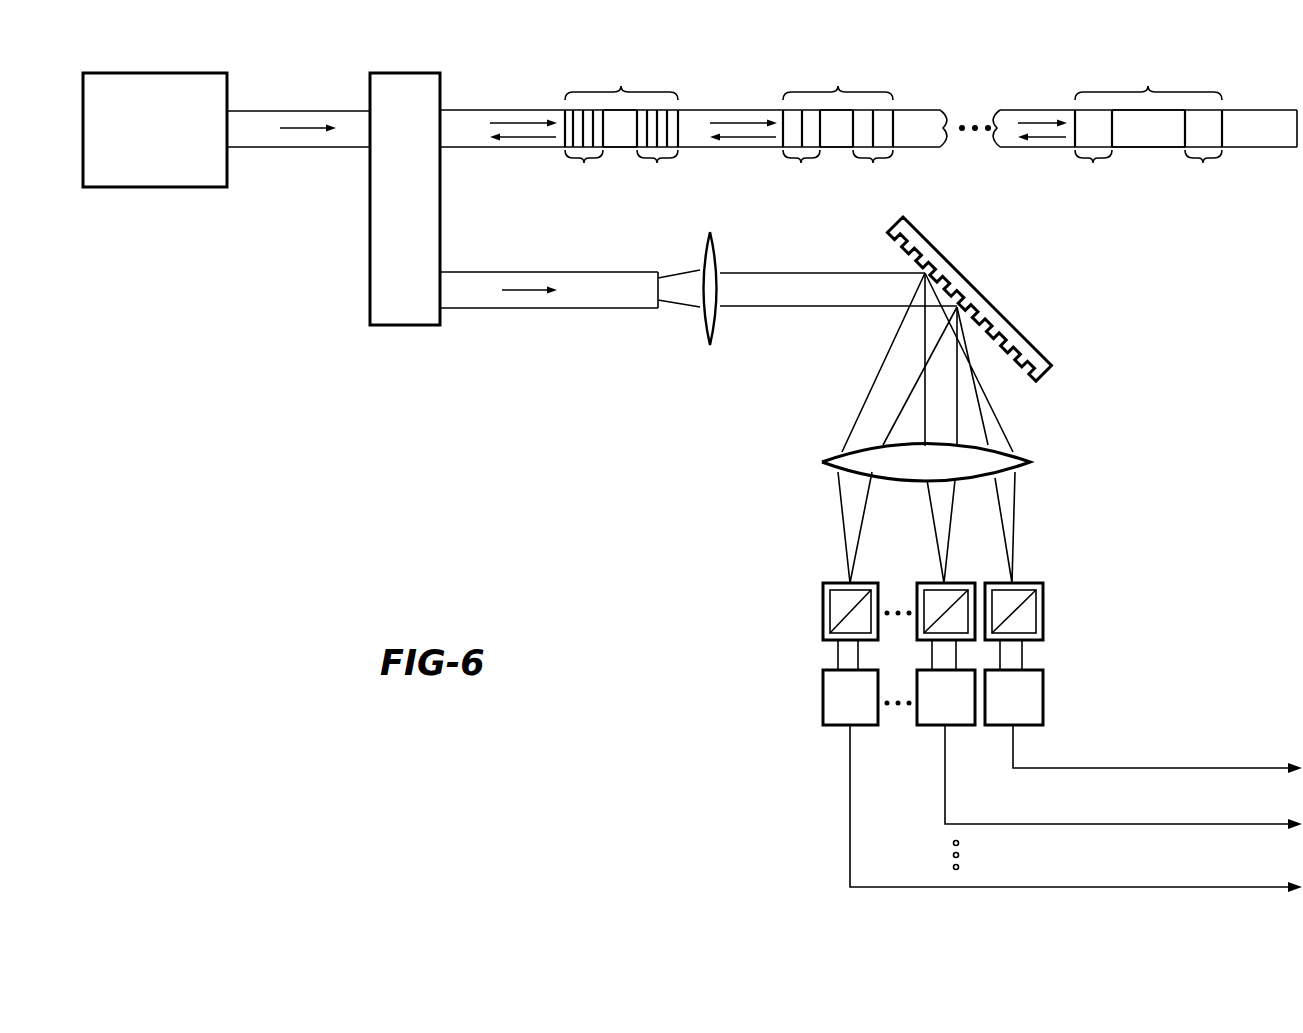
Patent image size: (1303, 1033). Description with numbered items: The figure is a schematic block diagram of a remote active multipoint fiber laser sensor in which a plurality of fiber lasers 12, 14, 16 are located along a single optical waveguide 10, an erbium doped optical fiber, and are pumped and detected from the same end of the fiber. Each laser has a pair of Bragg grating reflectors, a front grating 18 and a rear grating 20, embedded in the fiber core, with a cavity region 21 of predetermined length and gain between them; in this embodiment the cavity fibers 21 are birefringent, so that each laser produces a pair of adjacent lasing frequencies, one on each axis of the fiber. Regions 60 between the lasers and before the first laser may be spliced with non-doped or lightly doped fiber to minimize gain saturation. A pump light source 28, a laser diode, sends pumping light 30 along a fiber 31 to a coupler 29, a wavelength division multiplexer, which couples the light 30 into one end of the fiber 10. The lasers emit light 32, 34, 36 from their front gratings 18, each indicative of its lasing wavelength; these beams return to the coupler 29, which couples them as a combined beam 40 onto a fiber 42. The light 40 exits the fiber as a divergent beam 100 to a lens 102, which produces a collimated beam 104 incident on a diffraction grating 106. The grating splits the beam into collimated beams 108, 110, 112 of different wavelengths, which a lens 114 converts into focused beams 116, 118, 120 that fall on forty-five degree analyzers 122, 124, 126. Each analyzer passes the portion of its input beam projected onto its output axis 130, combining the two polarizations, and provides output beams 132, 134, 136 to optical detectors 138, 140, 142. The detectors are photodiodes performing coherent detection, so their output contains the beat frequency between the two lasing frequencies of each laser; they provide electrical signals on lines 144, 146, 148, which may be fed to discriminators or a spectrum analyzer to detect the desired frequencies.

The optical waveguide 10 is at (498, 100).
The fiber laser 12 is at (621, 86).
The fiber laser 14 is at (838, 86).
The fiber laser 16 is at (1148, 86).
The front Bragg grating reflector 18 is at (838, 152).
The rear Bragg grating reflector 20 is at (929, 152).
The cavity region 21 is at (620, 145).
The pump light source 28 is at (197, 74).
The coupler 29 is at (370, 230).
The pumping light 30 is at (312, 128).
The fiber 31 is at (258, 110).
The light 32 is at (523, 140).
The light 34 is at (727, 140).
The light 36 is at (1060, 138).
The combined beam 40 is at (527, 302).
The fiber 42 is at (472, 306).
The regions 60 is at (467, 150).
The divergent beam 100 is at (686, 296).
The lens 102 is at (720, 332).
The collimated beam 104 is at (750, 276).
The diffraction grating 106 is at (950, 270).
The collimated beam 108 is at (990, 412).
The collimated beam 110 is at (908, 415).
The collimated beam 112 is at (884, 366).
The lens 114 is at (1030, 465).
The focused beam 116 is at (1013, 525).
The focused beam 118 is at (930, 508).
The focused beam 120 is at (852, 520).
The 45 degree analyzer 122 is at (1043, 585).
The 45 degree analyzer 124 is at (926, 585).
The 45 degree analyzer 126 is at (805, 605).
The output axis 130 is at (846, 610).
The output beam 132 is at (1020, 658).
The output beam 134 is at (1020, 650).
The output beam 136 is at (840, 652).
The optical detector 138 is at (1043, 708).
The optical detector 140 is at (920, 723).
The optical detector 142 is at (822, 712).
The line 144 is at (1093, 768).
The line 146 is at (1005, 824).
The line 148 is at (990, 887).